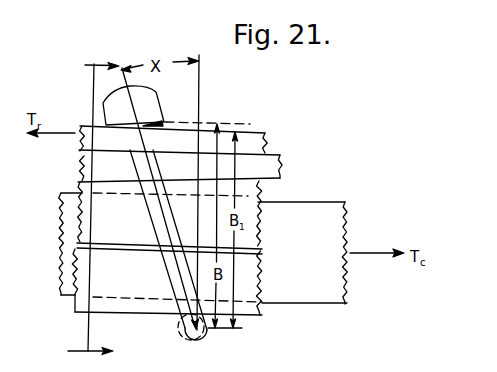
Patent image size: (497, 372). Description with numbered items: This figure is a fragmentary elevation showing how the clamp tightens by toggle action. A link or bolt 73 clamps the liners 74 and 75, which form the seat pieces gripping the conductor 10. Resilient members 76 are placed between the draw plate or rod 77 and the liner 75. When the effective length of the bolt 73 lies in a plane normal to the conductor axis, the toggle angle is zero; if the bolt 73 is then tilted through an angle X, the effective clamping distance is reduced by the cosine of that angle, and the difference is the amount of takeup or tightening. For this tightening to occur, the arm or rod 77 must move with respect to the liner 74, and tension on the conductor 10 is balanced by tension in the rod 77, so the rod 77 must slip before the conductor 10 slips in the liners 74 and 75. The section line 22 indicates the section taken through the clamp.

The section line 22- 22 is at (101, 205).
The draw plate or rod 77 is at (248, 137).
The resilient members 76 is at (272, 162).
The liner 75 is at (250, 202).
The liner 74 is at (237, 310).
The conductor 10 is at (330, 303).
The link or bolt 73 is at (180, 302).